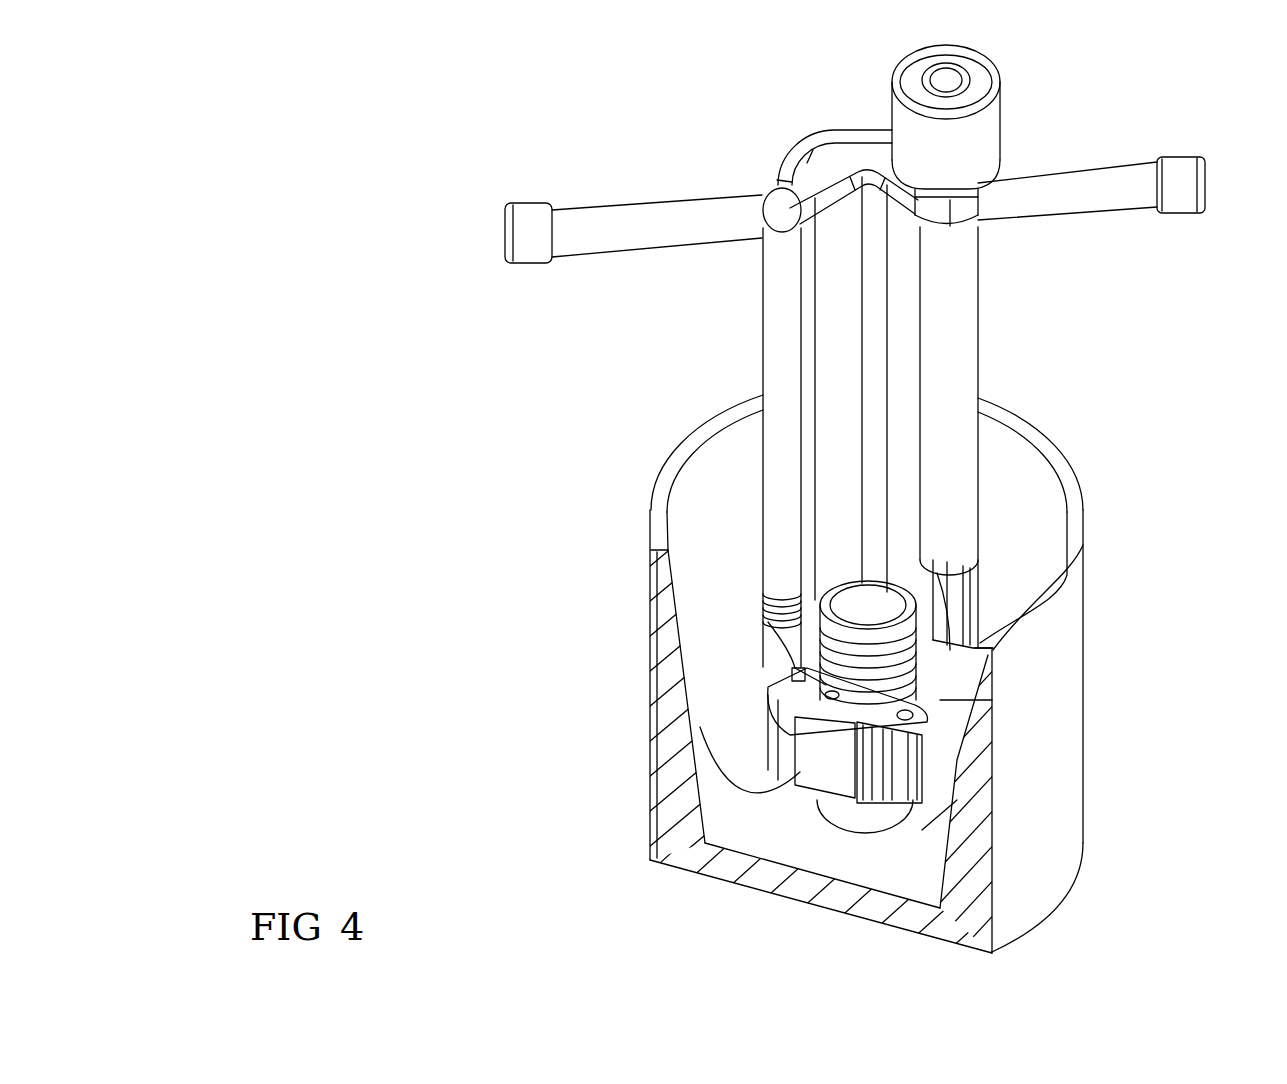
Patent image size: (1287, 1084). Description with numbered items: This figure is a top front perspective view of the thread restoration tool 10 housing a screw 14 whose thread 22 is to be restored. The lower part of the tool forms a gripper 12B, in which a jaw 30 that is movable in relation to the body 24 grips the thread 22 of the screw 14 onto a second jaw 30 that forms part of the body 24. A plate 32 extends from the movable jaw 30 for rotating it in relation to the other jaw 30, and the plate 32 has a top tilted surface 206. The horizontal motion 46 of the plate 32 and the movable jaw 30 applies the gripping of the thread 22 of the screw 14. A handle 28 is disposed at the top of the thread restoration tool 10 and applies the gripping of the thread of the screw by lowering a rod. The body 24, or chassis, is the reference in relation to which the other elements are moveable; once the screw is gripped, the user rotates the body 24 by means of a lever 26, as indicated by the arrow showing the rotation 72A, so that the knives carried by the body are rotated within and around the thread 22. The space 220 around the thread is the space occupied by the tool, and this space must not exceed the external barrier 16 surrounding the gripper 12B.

The thread restoration tool 10 is at (361, 519).
The gripper 12B is at (556, 673).
The screw 14 is at (863, 603).
The external barrier 16 is at (1067, 481).
The thread 22 is at (905, 645).
The body 24 is at (848, 312).
The lever 26 is at (1126, 177).
The handle 28 is at (982, 125).
The jaw 30 is at (827, 753).
The plate 32 is at (950, 707).
The horizontal motion 46 is at (1018, 703).
The rotation of body 72A is at (1155, 415).
The top tilted surface 206 is at (955, 632).
The space around the thread 220 is at (750, 645).